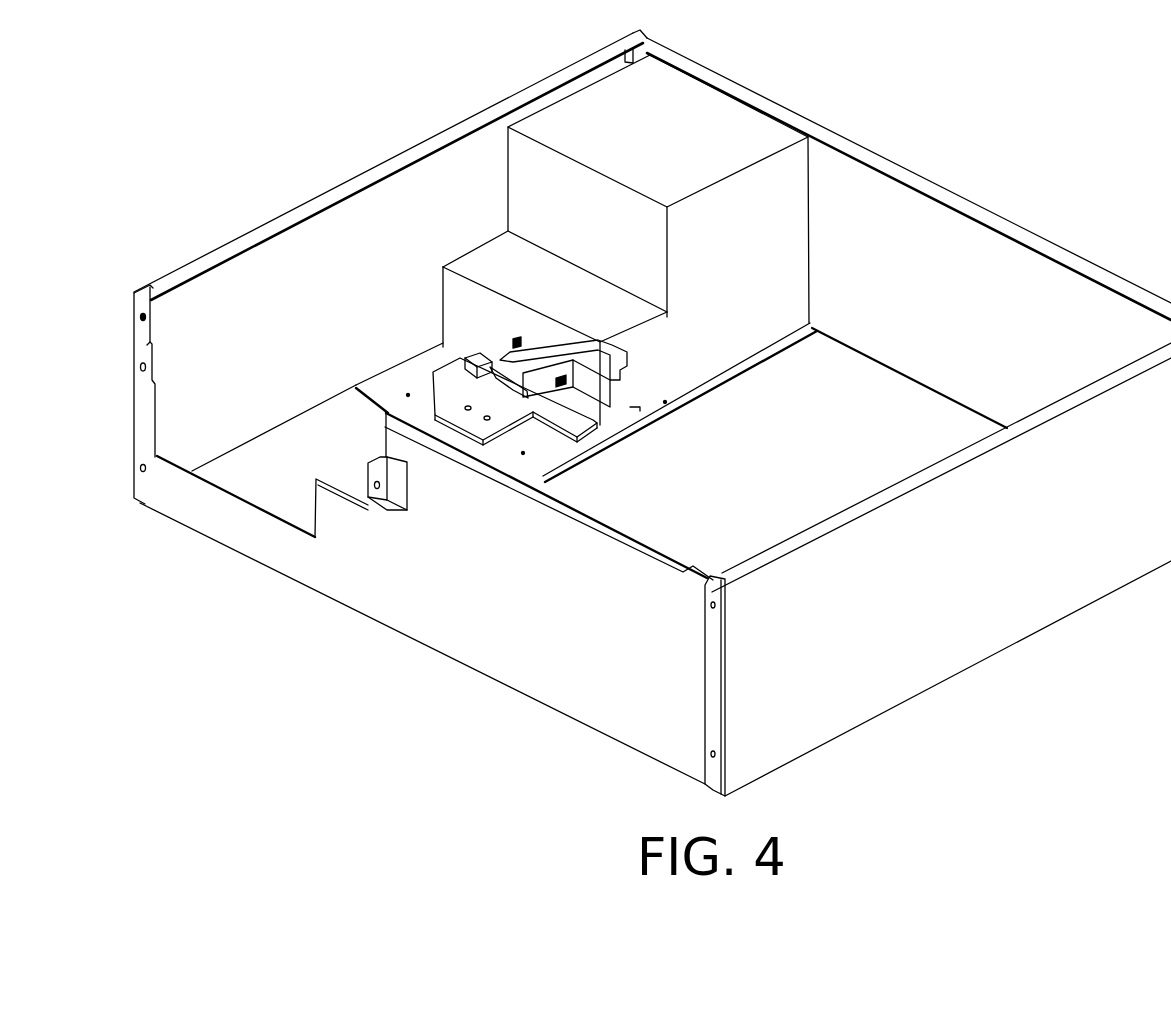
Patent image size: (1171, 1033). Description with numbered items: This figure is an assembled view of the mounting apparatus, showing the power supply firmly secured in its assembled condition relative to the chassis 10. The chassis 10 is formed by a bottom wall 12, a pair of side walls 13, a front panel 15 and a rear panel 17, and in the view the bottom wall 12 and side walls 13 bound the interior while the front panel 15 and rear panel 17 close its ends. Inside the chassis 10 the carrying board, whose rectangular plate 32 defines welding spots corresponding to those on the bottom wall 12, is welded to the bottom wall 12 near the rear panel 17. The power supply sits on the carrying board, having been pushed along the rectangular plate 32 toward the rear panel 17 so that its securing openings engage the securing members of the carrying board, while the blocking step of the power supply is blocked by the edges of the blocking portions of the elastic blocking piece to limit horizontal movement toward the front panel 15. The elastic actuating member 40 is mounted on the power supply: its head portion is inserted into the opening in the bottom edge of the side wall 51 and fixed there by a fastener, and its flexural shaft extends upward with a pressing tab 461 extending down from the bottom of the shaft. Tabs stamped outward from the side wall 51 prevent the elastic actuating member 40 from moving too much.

The chassis 10 is at (1010, 178).
The bottom wall 12 is at (237, 487).
The side walls 13 is at (208, 305).
The front panel 15 is at (297, 565).
The rear panel 17 is at (1065, 298).
The rectangular plate 32 is at (390, 383).
The elastic actuating member 40 is at (537, 348).
The pressing tab 461 is at (457, 306).
The side wall 51 is at (520, 387).